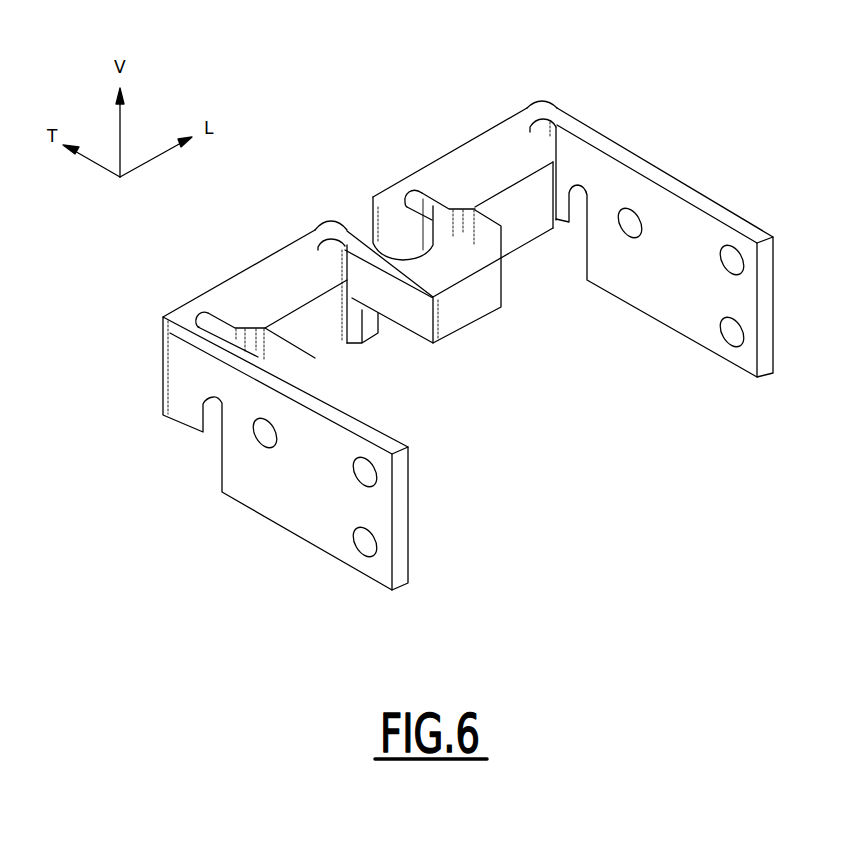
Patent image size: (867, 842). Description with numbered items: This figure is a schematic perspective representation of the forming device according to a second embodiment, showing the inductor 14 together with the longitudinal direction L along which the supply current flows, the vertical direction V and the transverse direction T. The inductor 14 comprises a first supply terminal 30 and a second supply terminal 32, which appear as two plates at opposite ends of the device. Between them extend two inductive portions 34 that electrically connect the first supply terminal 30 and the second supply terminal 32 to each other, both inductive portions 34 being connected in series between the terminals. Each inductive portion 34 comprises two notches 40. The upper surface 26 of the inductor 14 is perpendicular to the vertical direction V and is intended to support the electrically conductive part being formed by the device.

The inductor 14 is at (468, 302).
The upper surface 26 is at (317, 238).
The first supply terminal 30 is at (272, 493).
The second supply terminal 32 is at (678, 298).
The inductive portion 34 is at (256, 292).
The notch 40 is at (262, 342).